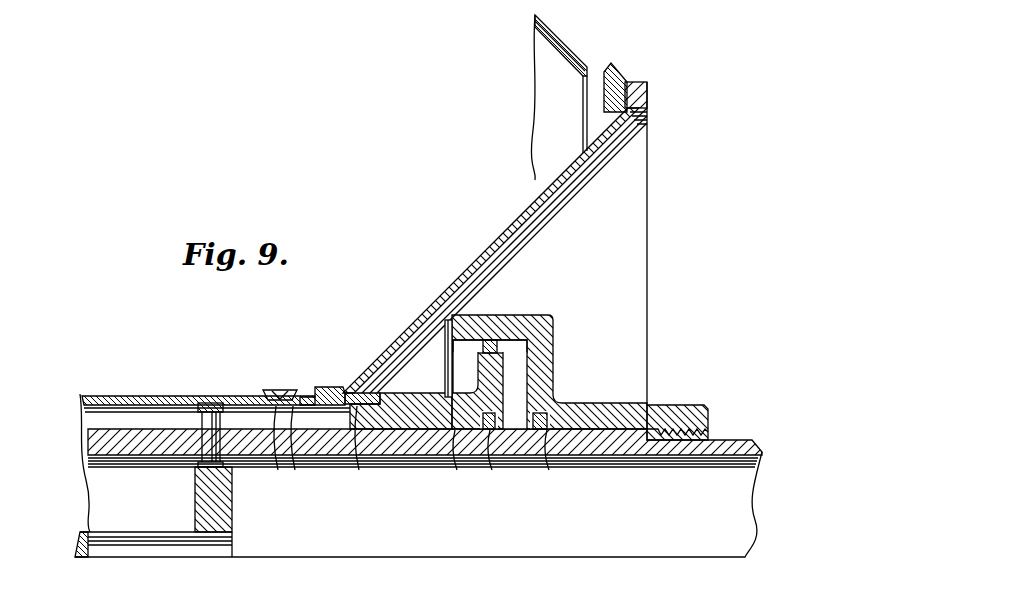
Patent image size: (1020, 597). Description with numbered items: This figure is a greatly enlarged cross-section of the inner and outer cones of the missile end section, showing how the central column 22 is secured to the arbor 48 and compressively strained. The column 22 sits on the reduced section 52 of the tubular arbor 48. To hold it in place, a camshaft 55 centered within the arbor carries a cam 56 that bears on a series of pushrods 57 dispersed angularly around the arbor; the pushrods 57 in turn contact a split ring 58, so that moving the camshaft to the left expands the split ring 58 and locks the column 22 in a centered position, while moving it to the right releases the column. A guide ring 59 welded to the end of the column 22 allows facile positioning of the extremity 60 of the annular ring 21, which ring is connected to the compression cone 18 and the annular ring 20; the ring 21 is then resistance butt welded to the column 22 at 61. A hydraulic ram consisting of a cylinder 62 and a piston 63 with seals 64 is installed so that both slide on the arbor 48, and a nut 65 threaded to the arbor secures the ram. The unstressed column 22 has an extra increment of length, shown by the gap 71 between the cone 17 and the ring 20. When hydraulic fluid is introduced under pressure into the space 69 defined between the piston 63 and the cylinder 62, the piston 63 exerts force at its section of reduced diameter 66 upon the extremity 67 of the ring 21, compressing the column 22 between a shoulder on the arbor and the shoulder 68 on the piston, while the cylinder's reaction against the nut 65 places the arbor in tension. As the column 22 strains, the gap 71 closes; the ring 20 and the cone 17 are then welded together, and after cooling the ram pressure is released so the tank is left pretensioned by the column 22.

The cone 17 is at (550, 32).
The compression cone 18 is at (477, 247).
The annular ring 20 is at (647, 93).
The annular ring 21 is at (328, 388).
The column 22 is at (160, 396).
The arbor 48 is at (400, 462).
The reduced section 52 is at (735, 440).
The camshaft 55 is at (150, 532).
The cam 56 is at (233, 522).
The pushrods 57 is at (197, 465).
The split ring 58 is at (213, 403).
The guide ring 59 is at (283, 390).
The extremity of annular ring 60 is at (300, 457).
The butt weld 61 is at (277, 457).
The cylinder 62 is at (549, 359).
The piston 63 is at (460, 458).
The seals 64 is at (490, 340).
The nut 65 is at (680, 405).
The section of reduced diameter 66 is at (355, 445).
The extremity of ring 67 is at (360, 393).
The shoulder 68 is at (385, 395).
The space 69 is at (527, 372).
The gap 71 is at (598, 75).